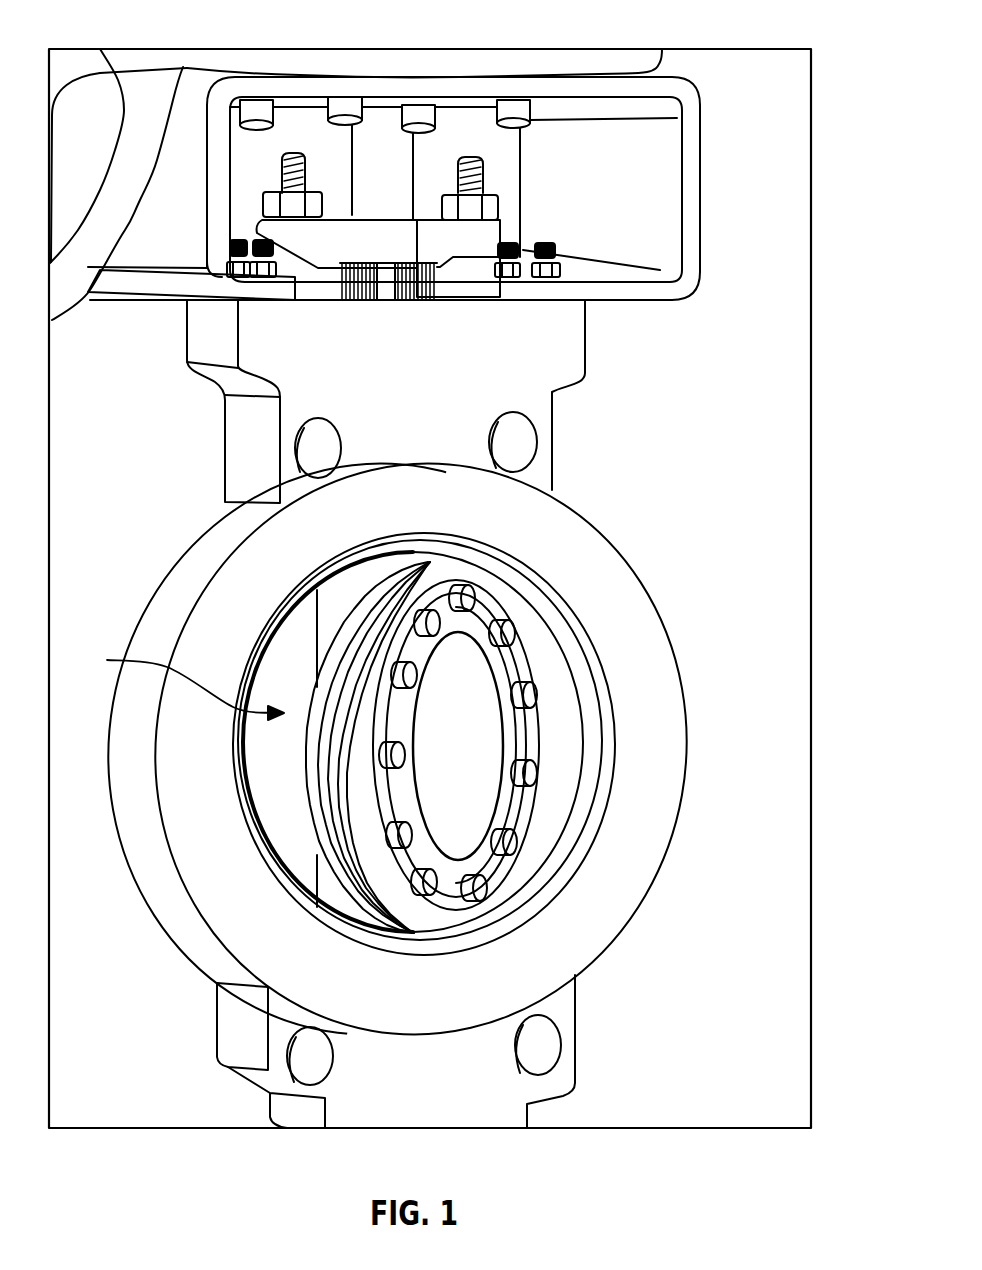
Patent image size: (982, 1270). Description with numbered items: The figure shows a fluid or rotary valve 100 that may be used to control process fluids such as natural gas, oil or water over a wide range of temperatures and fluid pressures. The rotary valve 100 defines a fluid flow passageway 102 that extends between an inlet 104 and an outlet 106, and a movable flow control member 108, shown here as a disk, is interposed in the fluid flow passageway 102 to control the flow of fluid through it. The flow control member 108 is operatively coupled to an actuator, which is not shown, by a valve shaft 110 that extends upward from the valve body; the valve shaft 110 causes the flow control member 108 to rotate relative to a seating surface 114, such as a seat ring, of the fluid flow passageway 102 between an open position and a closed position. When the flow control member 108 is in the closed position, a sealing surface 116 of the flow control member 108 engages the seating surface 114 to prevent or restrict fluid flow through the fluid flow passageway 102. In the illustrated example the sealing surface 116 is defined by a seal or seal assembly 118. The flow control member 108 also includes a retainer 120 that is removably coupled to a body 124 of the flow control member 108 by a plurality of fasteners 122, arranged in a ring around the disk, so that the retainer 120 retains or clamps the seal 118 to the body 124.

The rotary valve 100 is at (686, 392).
The fluid flow passageway 102 is at (169, 683).
The inlet 104 is at (292, 887).
The outlet 106 is at (297, 620).
The flow control member 108 is at (480, 735).
The valve shaft 110 is at (413, 157).
The seating surface 114 is at (585, 762).
The sealing surface 116 is at (317, 687).
The seal 118 is at (322, 827).
The retainer 120 is at (447, 858).
The fasteners 122 is at (473, 598).
The body 124 is at (313, 768).